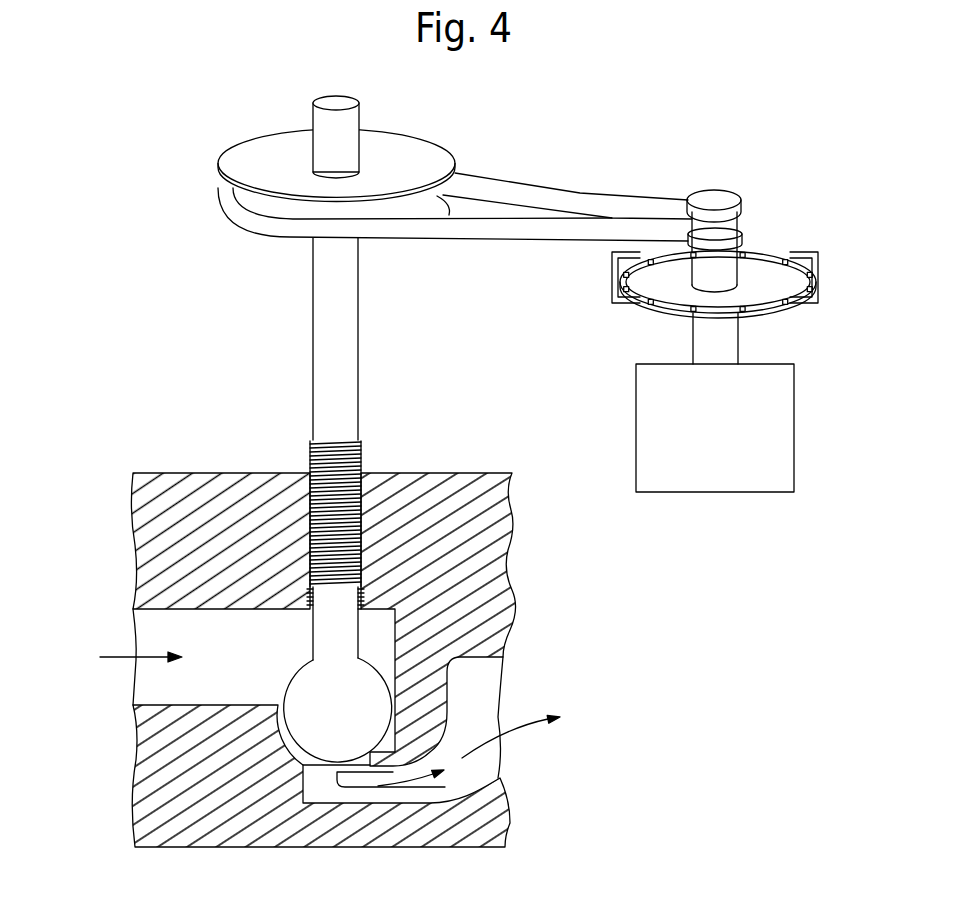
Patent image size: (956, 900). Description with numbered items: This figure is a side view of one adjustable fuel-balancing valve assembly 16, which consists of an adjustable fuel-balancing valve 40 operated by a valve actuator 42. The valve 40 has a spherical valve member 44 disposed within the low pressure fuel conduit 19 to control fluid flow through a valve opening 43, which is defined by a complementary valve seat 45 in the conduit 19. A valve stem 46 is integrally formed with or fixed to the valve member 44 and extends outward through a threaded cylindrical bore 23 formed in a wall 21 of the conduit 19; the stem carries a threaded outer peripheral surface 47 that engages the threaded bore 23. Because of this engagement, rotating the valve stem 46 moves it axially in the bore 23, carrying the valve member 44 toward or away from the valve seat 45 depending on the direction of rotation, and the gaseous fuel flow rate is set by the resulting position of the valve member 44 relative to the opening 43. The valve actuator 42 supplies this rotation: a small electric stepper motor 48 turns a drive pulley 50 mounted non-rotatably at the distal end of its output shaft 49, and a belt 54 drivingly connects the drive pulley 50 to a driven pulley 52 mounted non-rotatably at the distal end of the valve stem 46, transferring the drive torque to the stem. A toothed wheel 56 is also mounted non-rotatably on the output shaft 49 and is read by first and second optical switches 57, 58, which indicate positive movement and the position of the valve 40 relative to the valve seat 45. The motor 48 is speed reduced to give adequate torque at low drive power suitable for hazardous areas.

The adjustable fuel-balancing valve assembly 16 is at (630, 616).
The low pressure fuel conduit 19 is at (227, 848).
The wall 21 is at (145, 545).
The threaded cylindrical bore 23 is at (310, 490).
The adjustable fuel-balancing valve 40 is at (118, 633).
The valve actuator 42 is at (612, 164).
The valve opening 43 is at (306, 762).
The spherical valve member 44 is at (313, 678).
The valve seat 45 is at (285, 727).
The valve stem 46 is at (358, 333).
The threaded outer peripheral surface 47 is at (361, 460).
The electric motor 48 is at (794, 435).
The output shaft 49 is at (693, 342).
The drive pulley 50 is at (727, 196).
The driven pulley 52 is at (260, 148).
The belt 54 is at (499, 184).
The toothed wheel 56 is at (797, 316).
The first optical switch 57 is at (818, 270).
The second optical switch 58 is at (612, 270).